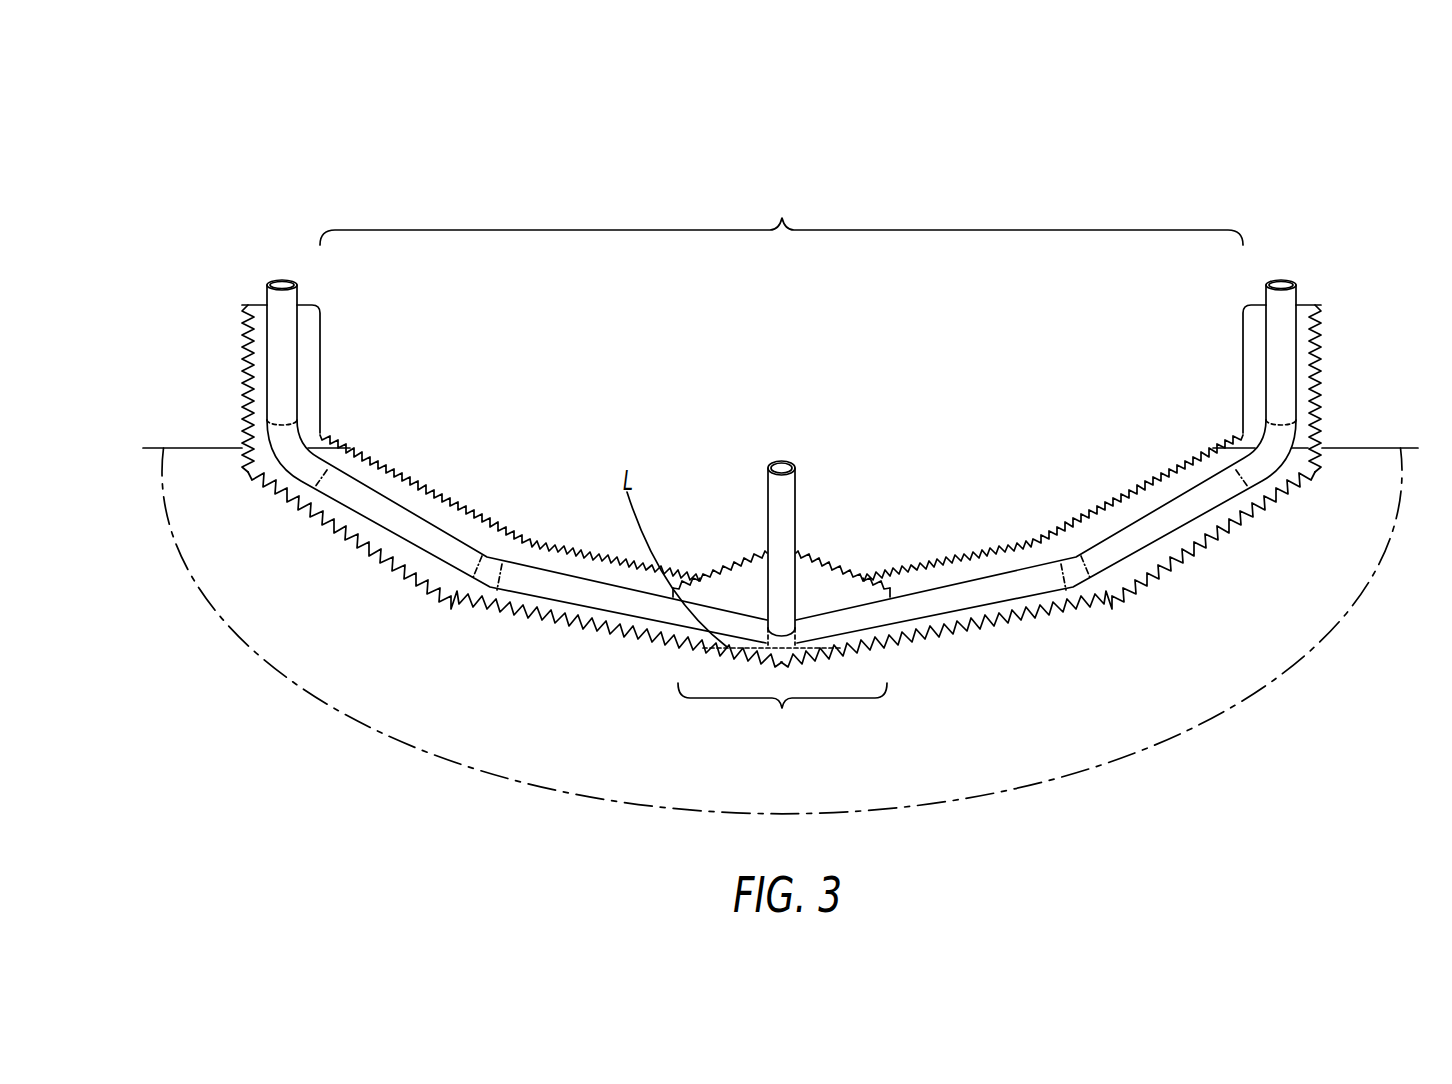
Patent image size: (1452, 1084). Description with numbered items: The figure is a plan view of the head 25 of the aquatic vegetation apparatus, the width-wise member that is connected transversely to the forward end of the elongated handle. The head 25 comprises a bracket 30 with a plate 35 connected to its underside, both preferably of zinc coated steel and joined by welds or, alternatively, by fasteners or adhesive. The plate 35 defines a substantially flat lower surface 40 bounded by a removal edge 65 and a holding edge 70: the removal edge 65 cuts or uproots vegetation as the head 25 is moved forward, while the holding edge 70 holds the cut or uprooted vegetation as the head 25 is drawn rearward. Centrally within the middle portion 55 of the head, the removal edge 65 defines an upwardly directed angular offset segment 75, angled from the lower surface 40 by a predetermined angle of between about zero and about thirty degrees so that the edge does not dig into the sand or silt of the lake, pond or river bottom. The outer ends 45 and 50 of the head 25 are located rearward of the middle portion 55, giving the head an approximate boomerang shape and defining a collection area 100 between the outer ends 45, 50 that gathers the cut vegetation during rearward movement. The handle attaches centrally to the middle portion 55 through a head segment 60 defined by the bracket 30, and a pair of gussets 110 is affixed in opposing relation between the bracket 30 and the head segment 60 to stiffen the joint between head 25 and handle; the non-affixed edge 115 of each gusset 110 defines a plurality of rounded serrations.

The head 25 is at (237, 177).
The bracket 30 is at (993, 612).
The plate 35 is at (1185, 542).
The lower surface 40 is at (372, 556).
The outer end 45 is at (222, 345).
The outer end 50 is at (1345, 333).
The middle portion 55 is at (778, 772).
The head segment 60 is at (789, 492).
The removal edge 65 is at (781, 575).
The holding edge 70 is at (457, 467).
The angular offset segment 75 is at (782, 713).
The collection area 100 is at (781, 212).
The gusset 110 is at (843, 545).
The non-affixed edge 115 is at (733, 560).